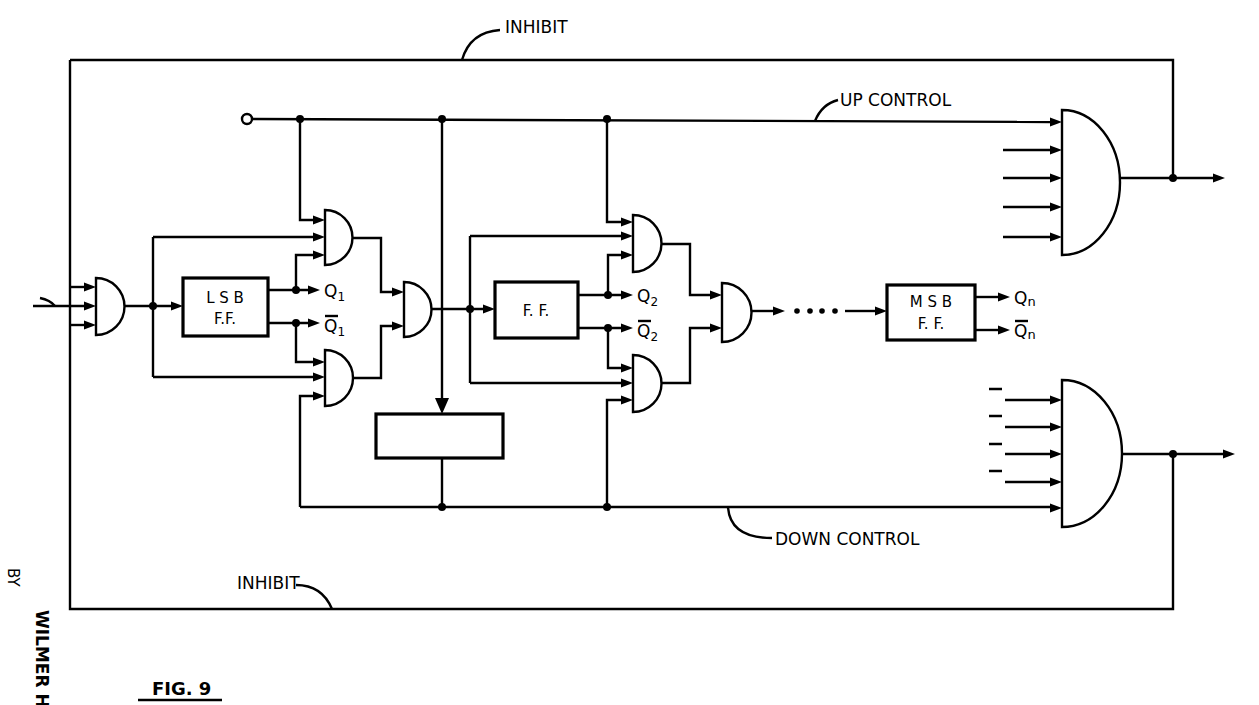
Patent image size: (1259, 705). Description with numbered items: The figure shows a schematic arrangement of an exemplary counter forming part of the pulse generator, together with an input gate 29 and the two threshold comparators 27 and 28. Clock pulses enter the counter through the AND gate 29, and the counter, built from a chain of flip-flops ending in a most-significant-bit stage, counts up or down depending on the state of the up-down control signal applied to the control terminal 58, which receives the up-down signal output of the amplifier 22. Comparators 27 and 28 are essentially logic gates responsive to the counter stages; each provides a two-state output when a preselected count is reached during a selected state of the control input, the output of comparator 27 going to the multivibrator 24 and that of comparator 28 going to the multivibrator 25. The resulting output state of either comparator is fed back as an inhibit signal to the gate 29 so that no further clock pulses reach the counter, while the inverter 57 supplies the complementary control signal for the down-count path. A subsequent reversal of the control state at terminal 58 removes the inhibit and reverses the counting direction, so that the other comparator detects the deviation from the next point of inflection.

The amplifier 22 is at (165, 113).
The control terminal 58 is at (251, 114).
The AND gate 29 is at (105, 289).
The inverter 57 is at (497, 444).
The first threshold comparator 27 is at (1098, 189).
The second threshold comparator 28 is at (1098, 466).
The multivibrator 24 is at (1224, 180).
The multivibrator 25 is at (1198, 452).